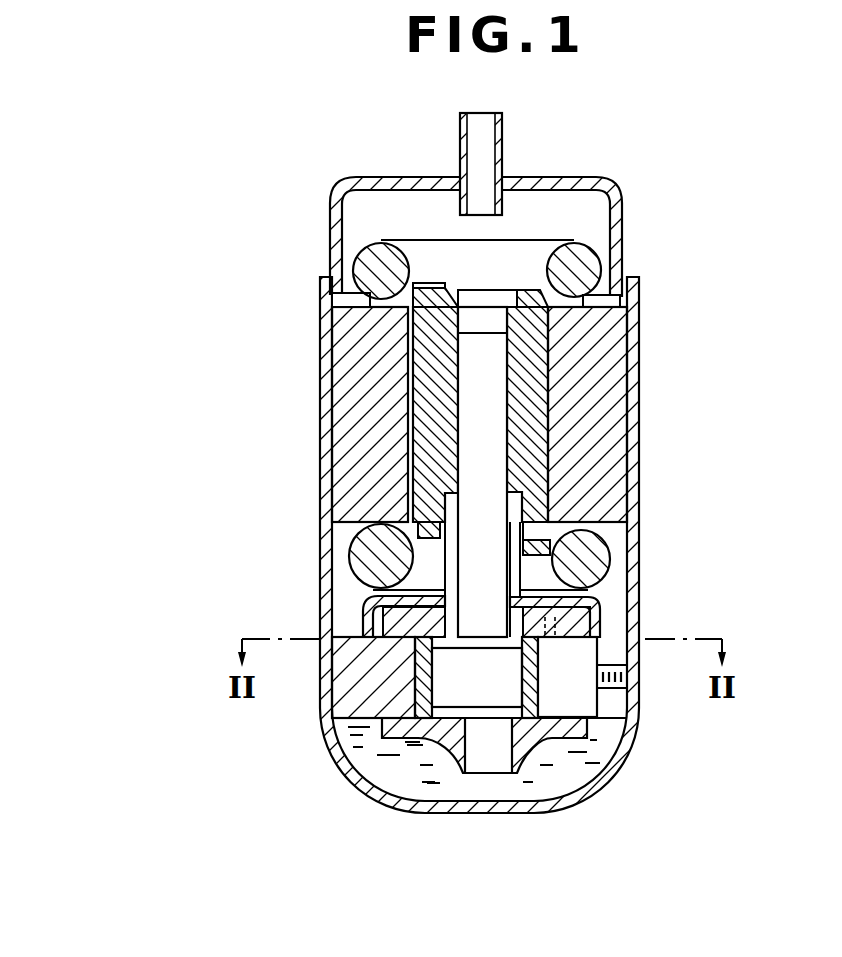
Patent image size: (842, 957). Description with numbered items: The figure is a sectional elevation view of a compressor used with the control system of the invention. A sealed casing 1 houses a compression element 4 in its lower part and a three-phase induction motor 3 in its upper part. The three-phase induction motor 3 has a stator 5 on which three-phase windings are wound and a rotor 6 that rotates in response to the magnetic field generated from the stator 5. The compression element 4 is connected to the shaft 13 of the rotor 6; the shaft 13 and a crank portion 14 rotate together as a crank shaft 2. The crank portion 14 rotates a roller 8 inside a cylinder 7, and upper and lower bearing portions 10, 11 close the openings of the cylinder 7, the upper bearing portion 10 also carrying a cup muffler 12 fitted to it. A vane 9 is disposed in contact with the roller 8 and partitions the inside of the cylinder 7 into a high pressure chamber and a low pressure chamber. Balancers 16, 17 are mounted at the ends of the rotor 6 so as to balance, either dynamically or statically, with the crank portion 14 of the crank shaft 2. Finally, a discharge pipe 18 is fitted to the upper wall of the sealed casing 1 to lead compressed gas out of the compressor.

The sealed casing 1 is at (638, 492).
The crank shaft 2 is at (475, 403).
The three-phase induction motor 3 is at (600, 397).
The compression element 4 is at (340, 663).
The stator 5 is at (610, 340).
The rotor 6 is at (423, 348).
The cylinder 7 is at (340, 707).
The roller 8 is at (423, 708).
The vane 9 is at (596, 650).
The upper bearing portion 10 is at (373, 600).
The lower bearing portion 11 is at (553, 735).
The cup muffler 12 is at (585, 600).
The shaft 13 is at (475, 445).
The crank portion 14 is at (449, 700).
The balancer 16 is at (428, 283).
The balancer 17 is at (550, 550).
The discharge pipe 18 is at (503, 138).